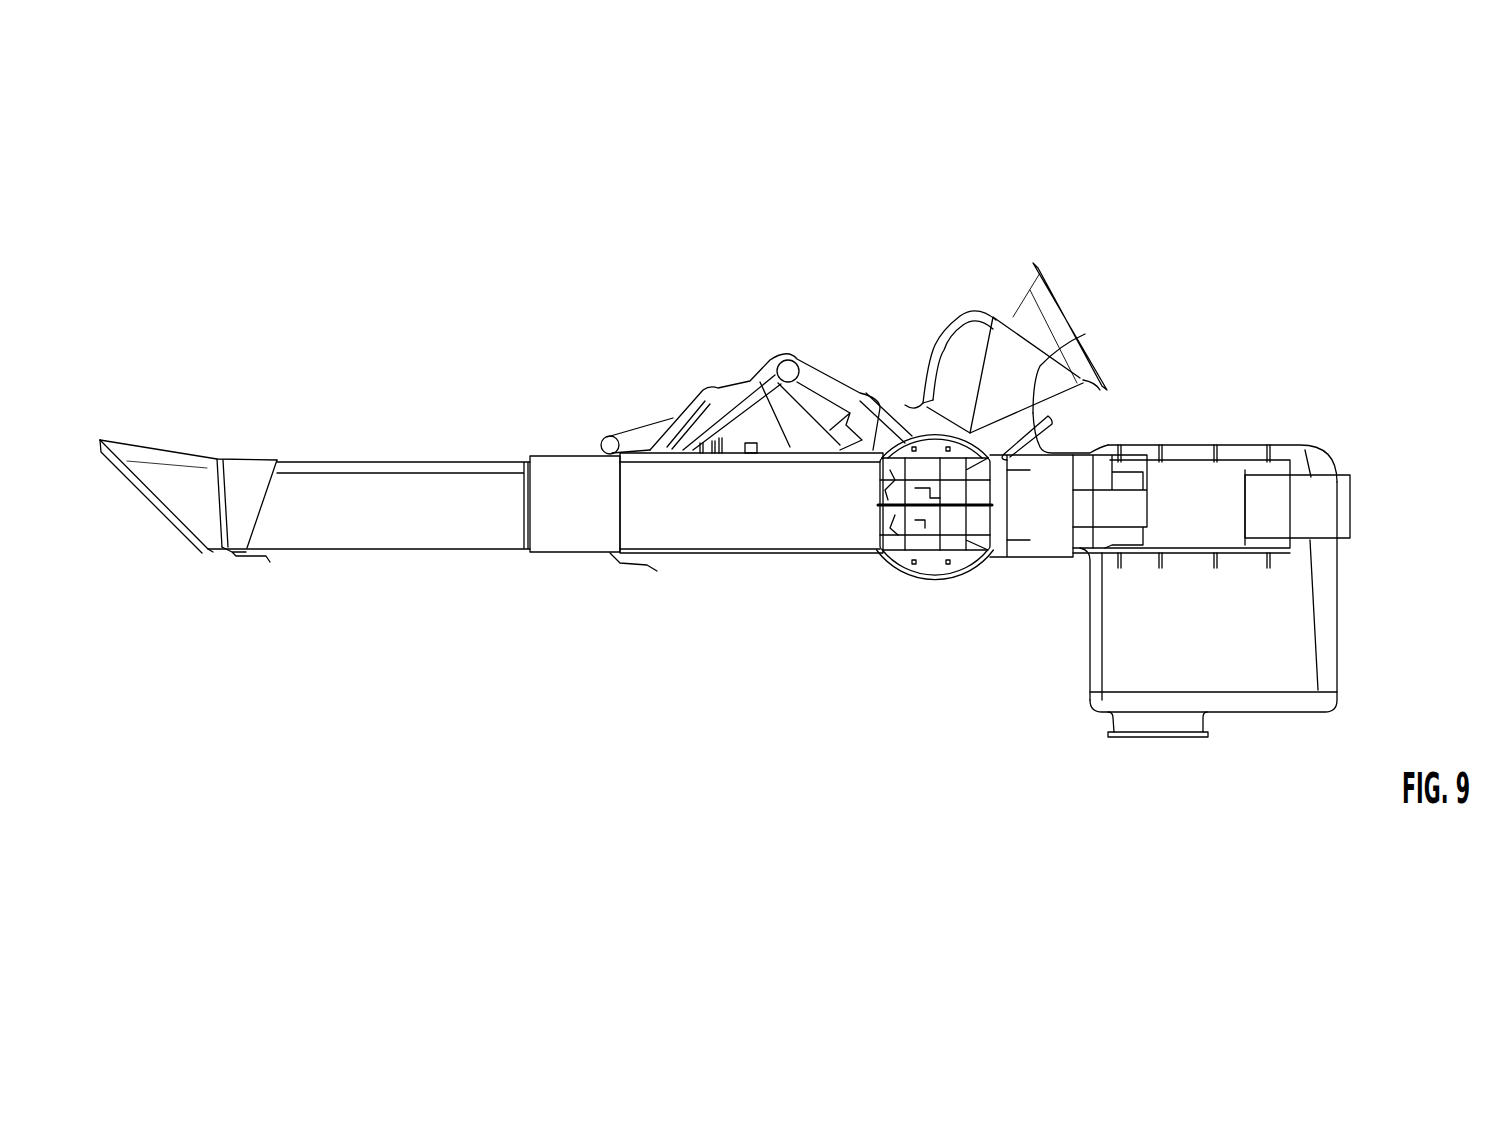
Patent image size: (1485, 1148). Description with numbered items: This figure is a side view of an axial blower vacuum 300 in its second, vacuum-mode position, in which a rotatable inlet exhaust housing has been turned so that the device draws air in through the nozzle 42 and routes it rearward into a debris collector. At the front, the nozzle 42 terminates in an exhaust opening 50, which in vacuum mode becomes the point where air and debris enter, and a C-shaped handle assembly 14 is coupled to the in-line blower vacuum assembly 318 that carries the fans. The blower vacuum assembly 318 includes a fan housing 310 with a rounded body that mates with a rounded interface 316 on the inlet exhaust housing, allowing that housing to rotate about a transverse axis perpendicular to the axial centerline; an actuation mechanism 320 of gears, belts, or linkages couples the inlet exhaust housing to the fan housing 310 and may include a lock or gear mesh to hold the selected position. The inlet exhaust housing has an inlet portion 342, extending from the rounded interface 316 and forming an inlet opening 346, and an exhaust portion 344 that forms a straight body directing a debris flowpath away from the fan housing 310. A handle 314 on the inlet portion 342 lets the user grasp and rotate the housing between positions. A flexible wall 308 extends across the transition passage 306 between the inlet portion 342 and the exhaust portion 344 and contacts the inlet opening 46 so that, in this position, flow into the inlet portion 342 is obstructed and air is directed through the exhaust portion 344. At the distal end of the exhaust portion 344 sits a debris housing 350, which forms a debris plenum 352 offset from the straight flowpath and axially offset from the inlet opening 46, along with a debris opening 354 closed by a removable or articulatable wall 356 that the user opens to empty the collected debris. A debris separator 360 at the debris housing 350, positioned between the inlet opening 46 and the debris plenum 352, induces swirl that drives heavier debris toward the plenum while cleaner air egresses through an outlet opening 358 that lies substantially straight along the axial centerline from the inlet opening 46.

The axial blower vacuum 300 is at (680, 270).
The handle assembly 14 is at (820, 355).
The nozzle 42 is at (475, 500).
The inlet opening 46 is at (1013, 483).
The exhaust opening 50 is at (162, 540).
The transition passage 306 is at (1050, 440).
The wall 308 is at (1085, 334).
The fan housing 310 is at (880, 577).
The handle 314 is at (945, 322).
The rounded interface 316 is at (915, 578).
The blower vacuum assembly 318 is at (865, 362).
The actuation mechanism 320 is at (927, 478).
The inlet portion 342 is at (1010, 365).
The exhaust portion 344 is at (1030, 530).
The inlet opening 346 is at (1068, 288).
The debris housing 350 is at (1088, 656).
The debris plenum 352 is at (1278, 643).
The debris opening 354 is at (1122, 742).
The wall 356 is at (1175, 725).
The outlet opening 358 is at (1352, 517).
The debris separator 360 is at (1222, 432).